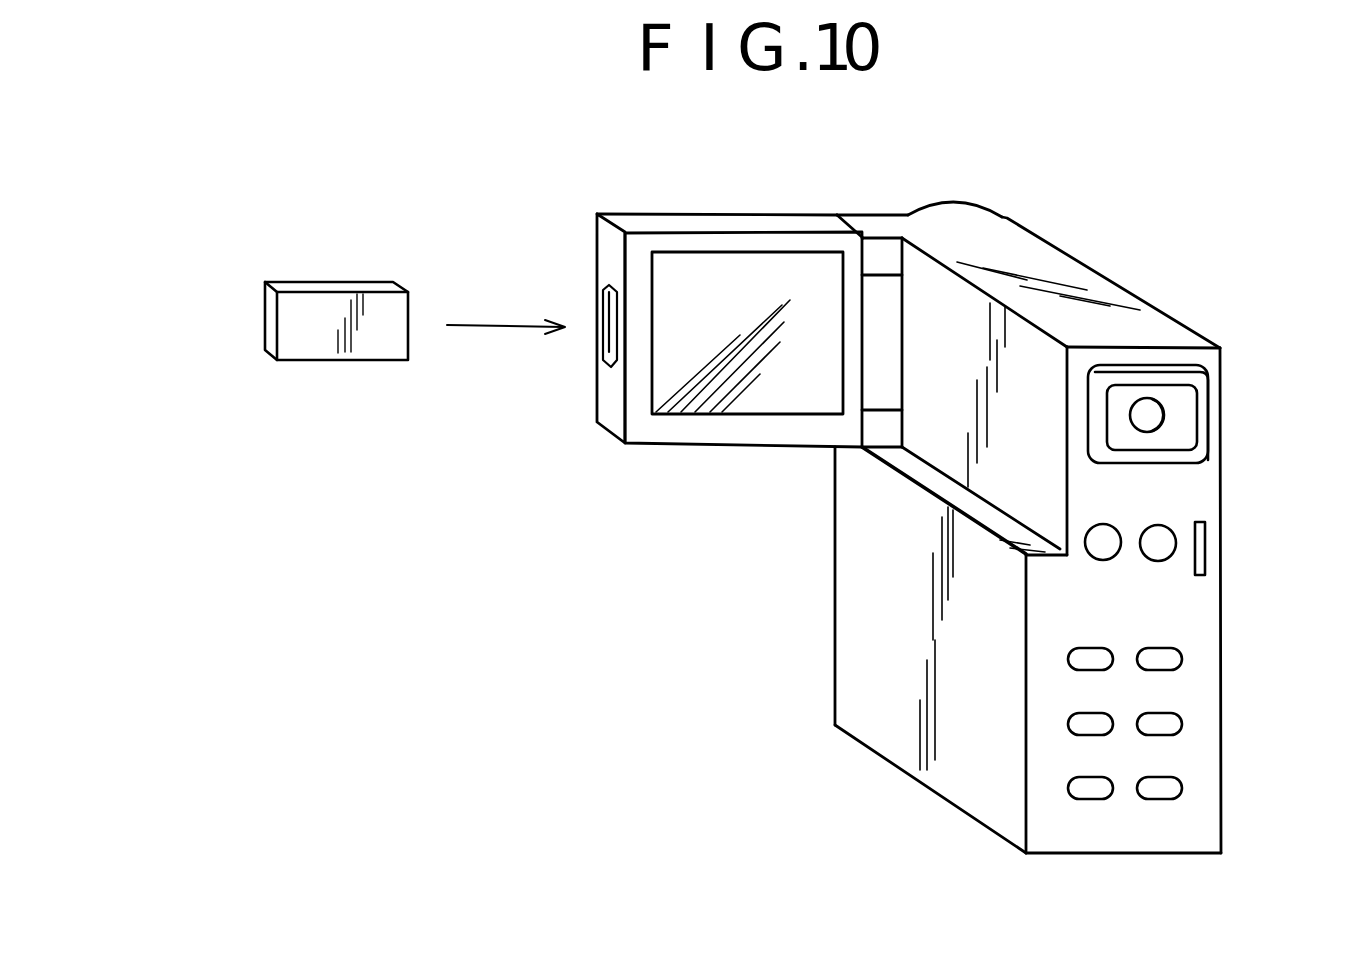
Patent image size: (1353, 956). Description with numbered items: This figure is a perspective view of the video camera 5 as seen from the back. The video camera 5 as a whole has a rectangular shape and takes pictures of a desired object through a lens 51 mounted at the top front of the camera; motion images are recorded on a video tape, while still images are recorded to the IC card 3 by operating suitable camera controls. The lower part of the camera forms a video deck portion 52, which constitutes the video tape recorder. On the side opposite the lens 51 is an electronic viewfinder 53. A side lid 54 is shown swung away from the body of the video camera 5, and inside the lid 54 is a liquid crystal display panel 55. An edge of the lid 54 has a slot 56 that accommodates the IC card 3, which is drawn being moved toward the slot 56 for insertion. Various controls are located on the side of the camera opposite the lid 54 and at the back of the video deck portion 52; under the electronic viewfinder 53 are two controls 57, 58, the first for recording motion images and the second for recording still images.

The IC card 3 is at (333, 342).
The video camera 5 is at (593, 612).
The lens 51 is at (968, 205).
The video deck portion 52 is at (933, 768).
The electronic viewfinder 53 is at (1177, 417).
The side lid 54 is at (732, 240).
The liquid crystal display panel 55 is at (718, 400).
The slot 56 is at (608, 300).
The control 57 is at (1103, 550).
The control 58 is at (1158, 550).